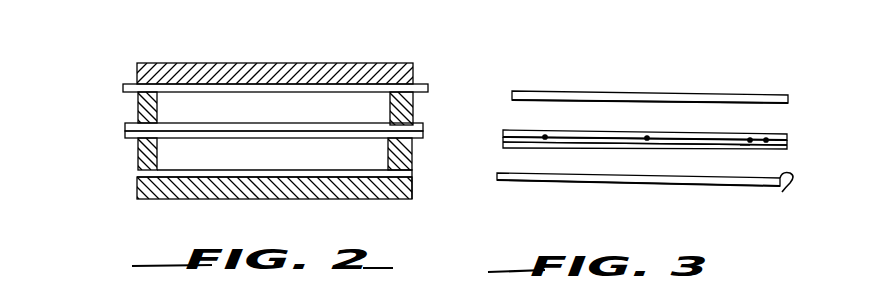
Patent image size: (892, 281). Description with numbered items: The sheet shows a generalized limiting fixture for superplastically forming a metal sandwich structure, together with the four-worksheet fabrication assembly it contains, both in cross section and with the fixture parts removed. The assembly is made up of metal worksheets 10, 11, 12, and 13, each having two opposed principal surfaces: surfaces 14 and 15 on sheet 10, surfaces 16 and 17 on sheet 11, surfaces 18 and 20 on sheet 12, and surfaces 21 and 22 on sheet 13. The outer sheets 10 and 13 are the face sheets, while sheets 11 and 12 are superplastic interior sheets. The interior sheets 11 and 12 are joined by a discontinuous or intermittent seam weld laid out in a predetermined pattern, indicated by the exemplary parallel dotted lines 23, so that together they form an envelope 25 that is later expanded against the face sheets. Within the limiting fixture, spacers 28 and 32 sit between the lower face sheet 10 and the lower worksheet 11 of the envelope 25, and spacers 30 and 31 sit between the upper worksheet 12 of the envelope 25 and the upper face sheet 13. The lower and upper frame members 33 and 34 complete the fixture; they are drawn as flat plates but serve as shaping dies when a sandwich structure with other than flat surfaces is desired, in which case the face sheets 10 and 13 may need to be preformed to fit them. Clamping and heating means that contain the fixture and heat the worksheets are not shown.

In FIG. 2, the face sheet 10 is at (413, 178).
In FIG. 3, the face sheet 10 is at (638, 195).
In FIG. 2, the interior sheet 11 is at (422, 138).
In FIG. 3, the interior sheet 11 is at (504, 148).
In FIG. 2, the interior sheet 12 is at (425, 128).
In FIG. 3, the interior sheet 12 is at (504, 132).
In FIG. 2, the face sheet 13 is at (422, 84).
In FIG. 3, the face sheet 13 is at (509, 94).
In FIG. 3, the principal surface 14 is at (747, 188).
In FIG. 3, the principal surface 15 is at (779, 195).
In FIG. 3, the principal surface 16 is at (741, 148).
In FIG. 3, the principal surface 17 is at (779, 147).
In FIG. 3, the principal surface 18 is at (767, 139).
In FIG. 3, the principal surface 20 is at (707, 129).
In FIG. 3, the principal surface 21 is at (751, 104).
In FIG. 3, the principal surface 22 is at (738, 93).
In FIG. 3, the seam weld 23 is at (647, 135).
In FIG. 2, the envelope 25 is at (122, 133).
In FIG. 3, the envelope 25 is at (503, 139).
In FIG. 2, the spacer 28 is at (137, 153).
In FIG. 2, the spacer 30 is at (137, 110).
In FIG. 2, the spacer 31 is at (414, 109).
In FIG. 2, the spacer 32 is at (413, 160).
In FIG. 2, the lower frame member 33 is at (413, 200).
In FIG. 2, the upper frame member 34 is at (385, 64).